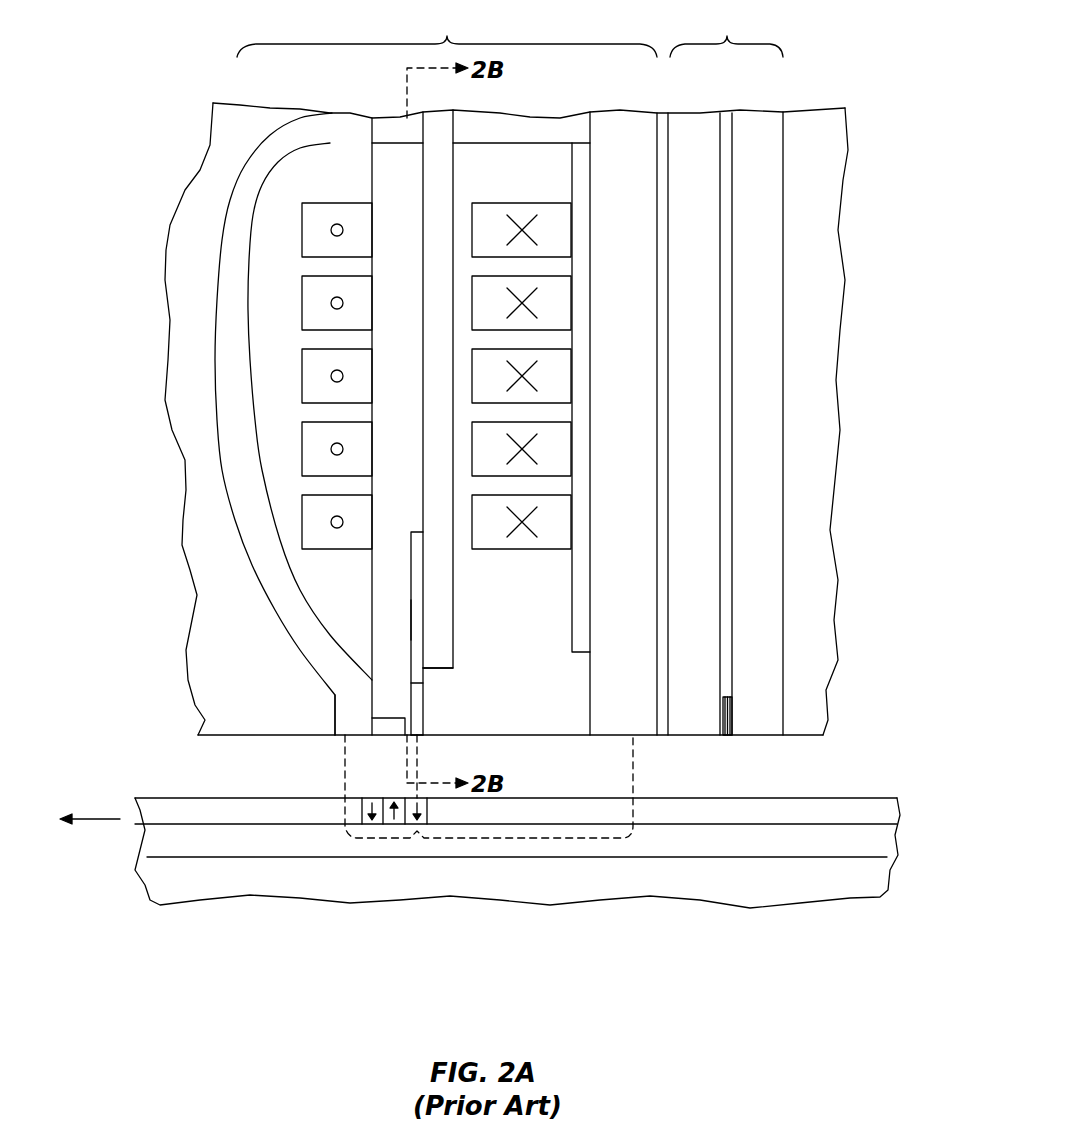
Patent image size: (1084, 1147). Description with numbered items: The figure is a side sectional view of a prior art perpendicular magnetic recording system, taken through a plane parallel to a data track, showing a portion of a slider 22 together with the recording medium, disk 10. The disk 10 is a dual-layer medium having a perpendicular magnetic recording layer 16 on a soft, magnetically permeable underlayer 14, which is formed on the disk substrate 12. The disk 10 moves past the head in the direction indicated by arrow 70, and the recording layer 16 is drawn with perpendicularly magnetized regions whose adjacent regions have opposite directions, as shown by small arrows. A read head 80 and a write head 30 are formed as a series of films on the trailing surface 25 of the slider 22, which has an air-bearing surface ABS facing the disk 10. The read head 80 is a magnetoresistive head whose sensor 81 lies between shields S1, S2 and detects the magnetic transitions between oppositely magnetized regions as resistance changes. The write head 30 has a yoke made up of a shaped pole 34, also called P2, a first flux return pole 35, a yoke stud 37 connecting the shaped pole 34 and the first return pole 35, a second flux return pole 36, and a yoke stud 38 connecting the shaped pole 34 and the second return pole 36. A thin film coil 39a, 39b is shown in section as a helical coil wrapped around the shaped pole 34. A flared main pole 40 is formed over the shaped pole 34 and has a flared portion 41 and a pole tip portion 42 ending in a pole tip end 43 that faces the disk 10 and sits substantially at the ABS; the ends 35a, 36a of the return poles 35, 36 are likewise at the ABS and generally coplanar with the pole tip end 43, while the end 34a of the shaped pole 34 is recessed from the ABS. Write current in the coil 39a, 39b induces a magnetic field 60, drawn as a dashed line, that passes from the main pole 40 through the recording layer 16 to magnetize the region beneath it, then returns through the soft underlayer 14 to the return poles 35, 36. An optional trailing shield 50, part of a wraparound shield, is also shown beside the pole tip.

The disk 10 is at (672, 908).
The disk substrate 12 is at (192, 888).
The soft underlayer (SUL) 14 is at (158, 838).
The recording layer (RL) 16 is at (207, 800).
The slider 22 is at (848, 190).
The trailing surface 25 is at (783, 145).
The write head 30 is at (447, 31).
The shaped pole 34 is at (444, 310).
The end of shaped pole 34a is at (445, 668).
The first flux return pole 35 is at (600, 705).
The end of first return pole 35a is at (640, 737).
The second flux return pole 36 is at (306, 643).
The end of second return pole 36a is at (340, 740).
The yoke stud 37 is at (552, 117).
The yoke stud 38 is at (398, 130).
The thin film coil 39a is at (540, 203).
The thin film coil 39b is at (340, 203).
The flared main pole (MP) 40 is at (420, 532).
The flared portion 41 is at (418, 610).
The pole tip portion 42 is at (418, 724).
The pole tip end 43 is at (417, 740).
The trailing shield (TS) 50 is at (388, 717).
The magnetic field 60 is at (383, 838).
The arrow 70 is at (100, 819).
The read head 80 is at (726, 31).
The MR sensor 81 is at (737, 705).
The MR shield S1 is at (775, 640).
The MR shield S2 is at (707, 730).
The air-bearing surface ABS is at (805, 737).